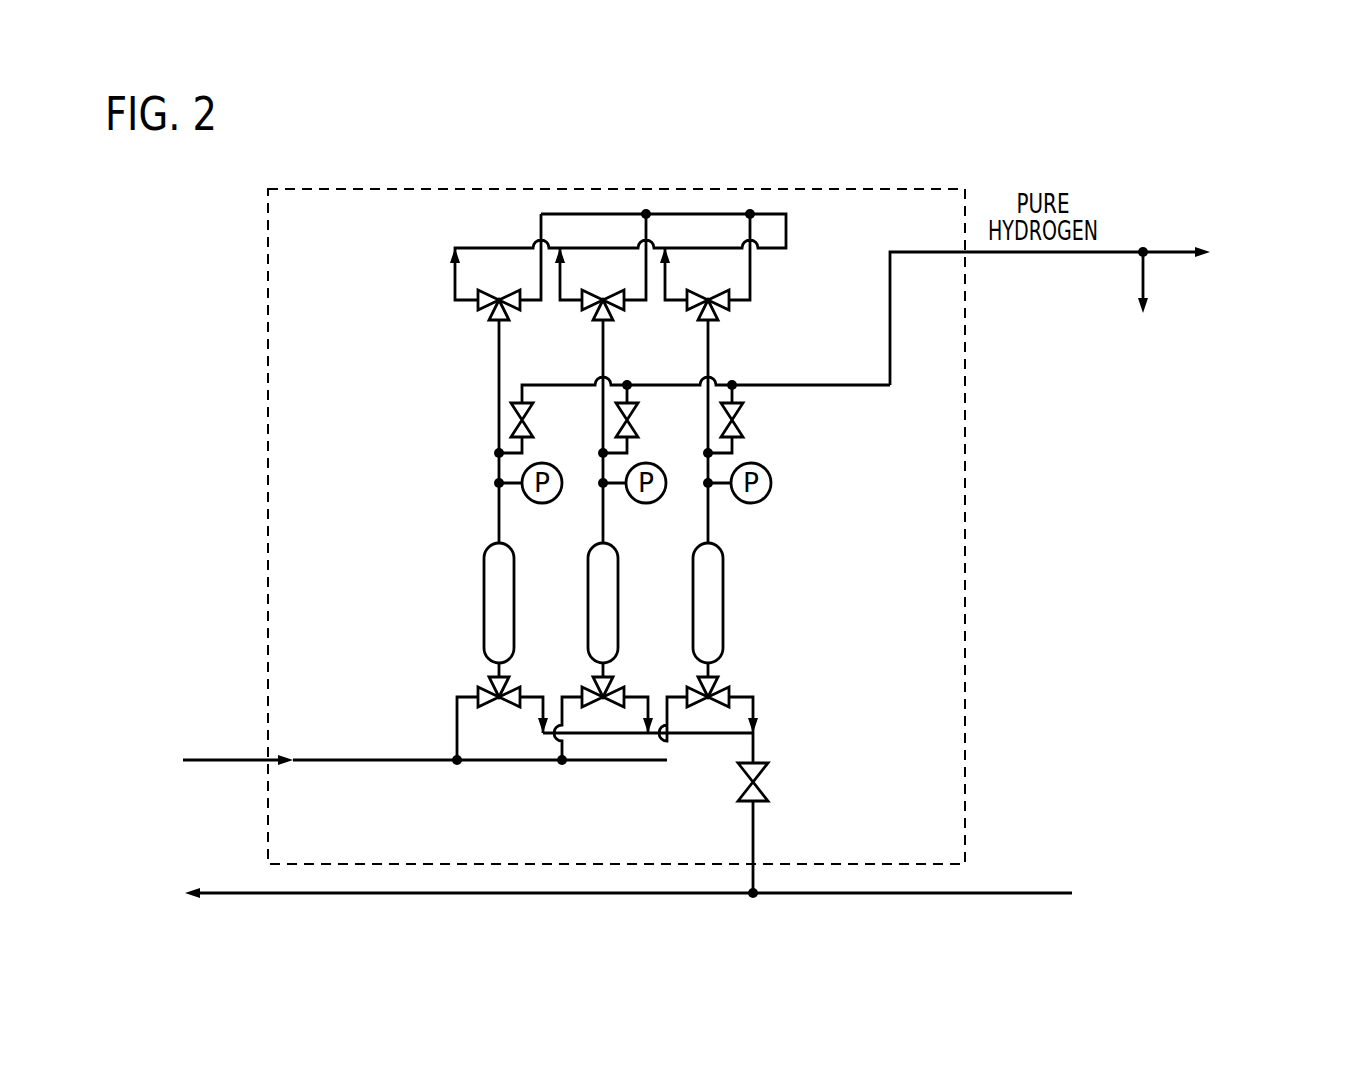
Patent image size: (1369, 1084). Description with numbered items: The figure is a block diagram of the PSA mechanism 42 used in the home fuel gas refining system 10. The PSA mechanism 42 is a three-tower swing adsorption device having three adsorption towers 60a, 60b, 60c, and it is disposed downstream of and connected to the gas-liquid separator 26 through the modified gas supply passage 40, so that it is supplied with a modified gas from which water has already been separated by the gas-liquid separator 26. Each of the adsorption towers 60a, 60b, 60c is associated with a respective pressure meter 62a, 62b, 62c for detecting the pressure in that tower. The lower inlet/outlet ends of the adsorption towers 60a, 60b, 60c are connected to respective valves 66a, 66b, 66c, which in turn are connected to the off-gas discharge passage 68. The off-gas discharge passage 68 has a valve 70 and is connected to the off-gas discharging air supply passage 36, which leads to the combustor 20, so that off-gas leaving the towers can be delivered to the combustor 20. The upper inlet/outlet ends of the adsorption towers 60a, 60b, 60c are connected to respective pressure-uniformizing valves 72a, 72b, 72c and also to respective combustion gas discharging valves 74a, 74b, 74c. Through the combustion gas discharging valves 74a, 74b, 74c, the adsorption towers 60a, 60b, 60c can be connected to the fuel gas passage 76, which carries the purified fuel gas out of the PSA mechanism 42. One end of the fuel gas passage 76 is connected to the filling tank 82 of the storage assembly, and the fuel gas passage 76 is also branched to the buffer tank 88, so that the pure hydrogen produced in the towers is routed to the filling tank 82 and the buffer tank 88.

The home fuel gas refining system 10 is at (176, 208).
The PSA mechanism 42 is at (967, 562).
The pressure-uniformizing valve 72a is at (476, 306).
The pressure-uniformizing valve 72b is at (583, 306).
The pressure-uniformizing valve 72c is at (688, 306).
The combustion gas discharging valve 74a is at (535, 423).
The combustion gas discharging valve 74b is at (640, 423).
The combustion gas discharging valve 74c is at (745, 423).
The adsorption tower 60a is at (487, 547).
The adsorption tower 60b is at (592, 547).
The adsorption tower 60c is at (697, 547).
The pressure meter 62a is at (543, 504).
The pressure meter 62b is at (647, 504).
The pressure meter 62c is at (752, 504).
The valve 66a is at (518, 686).
The valve 66b is at (622, 686).
The valve 66c is at (727, 686).
The valve 70 is at (738, 781).
The off-gas discharge passage 68 is at (757, 823).
The off-gas discharging air supply passage 36 is at (831, 896).
The modified gas supply passage 40 is at (241, 759).
The fuel gas passage 76 is at (1070, 255).
The gas-liquid separator 26 is at (119, 766).
The combustor 20 is at (112, 894).
The filling tank 82 is at (1290, 254).
The buffer tank 88 is at (1144, 353).